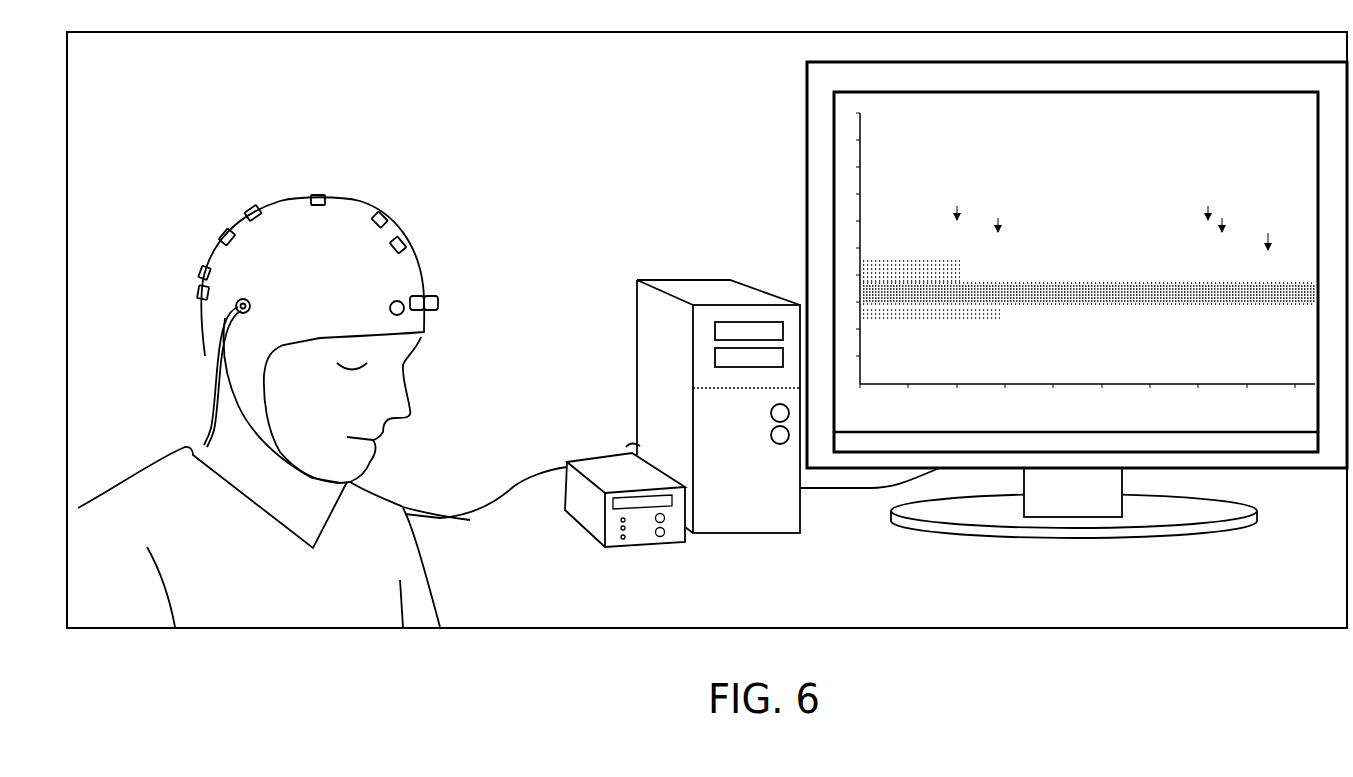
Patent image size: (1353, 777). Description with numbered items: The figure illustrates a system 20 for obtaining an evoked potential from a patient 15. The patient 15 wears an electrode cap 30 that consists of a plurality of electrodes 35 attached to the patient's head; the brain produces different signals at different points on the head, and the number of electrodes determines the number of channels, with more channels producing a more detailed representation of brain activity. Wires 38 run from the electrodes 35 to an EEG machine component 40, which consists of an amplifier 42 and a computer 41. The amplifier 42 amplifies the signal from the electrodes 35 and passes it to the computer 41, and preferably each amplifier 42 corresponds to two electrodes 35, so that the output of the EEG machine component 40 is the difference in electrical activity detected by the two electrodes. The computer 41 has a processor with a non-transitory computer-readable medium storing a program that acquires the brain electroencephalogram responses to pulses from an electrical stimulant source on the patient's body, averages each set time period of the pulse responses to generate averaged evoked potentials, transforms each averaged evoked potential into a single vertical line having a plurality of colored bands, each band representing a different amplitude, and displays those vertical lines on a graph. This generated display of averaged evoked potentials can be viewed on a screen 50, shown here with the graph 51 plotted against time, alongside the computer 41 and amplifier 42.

The patient 15 is at (170, 455).
The system 20 is at (393, 97).
The electrode cap 30 is at (192, 240).
The electrodes 35 is at (236, 305).
The wires 38 is at (213, 380).
The EEG machine component 40 is at (578, 368).
The computer 41 is at (698, 285).
The amplifier 42 is at (595, 458).
The screen 50 is at (827, 60).
The spectrogram plot 51 is at (850, 127).